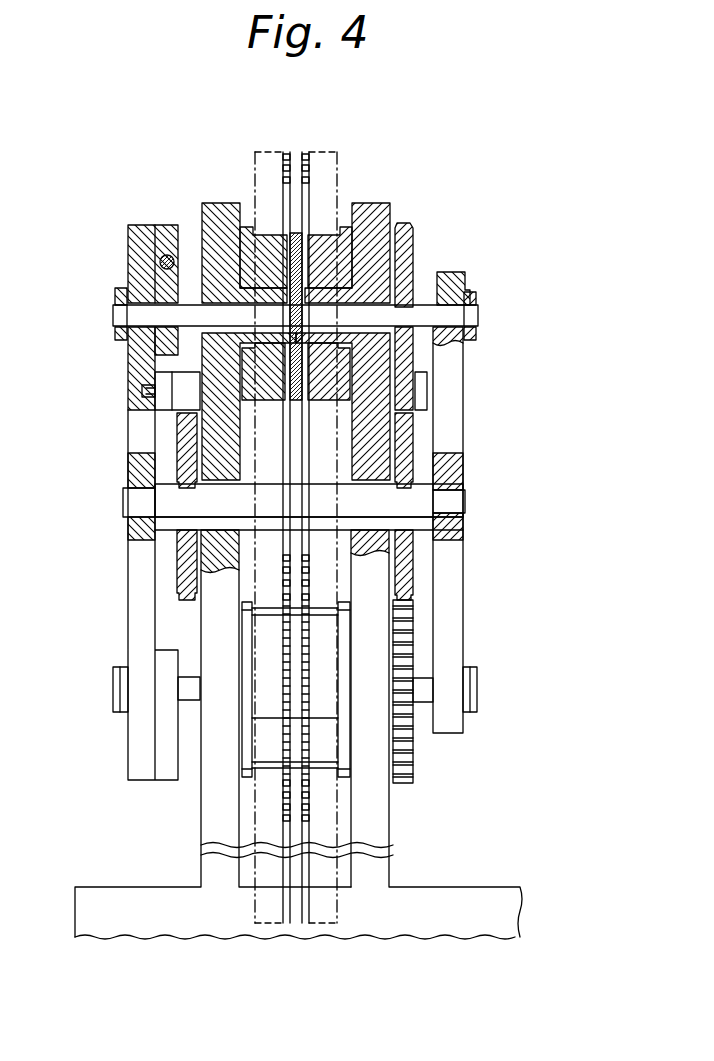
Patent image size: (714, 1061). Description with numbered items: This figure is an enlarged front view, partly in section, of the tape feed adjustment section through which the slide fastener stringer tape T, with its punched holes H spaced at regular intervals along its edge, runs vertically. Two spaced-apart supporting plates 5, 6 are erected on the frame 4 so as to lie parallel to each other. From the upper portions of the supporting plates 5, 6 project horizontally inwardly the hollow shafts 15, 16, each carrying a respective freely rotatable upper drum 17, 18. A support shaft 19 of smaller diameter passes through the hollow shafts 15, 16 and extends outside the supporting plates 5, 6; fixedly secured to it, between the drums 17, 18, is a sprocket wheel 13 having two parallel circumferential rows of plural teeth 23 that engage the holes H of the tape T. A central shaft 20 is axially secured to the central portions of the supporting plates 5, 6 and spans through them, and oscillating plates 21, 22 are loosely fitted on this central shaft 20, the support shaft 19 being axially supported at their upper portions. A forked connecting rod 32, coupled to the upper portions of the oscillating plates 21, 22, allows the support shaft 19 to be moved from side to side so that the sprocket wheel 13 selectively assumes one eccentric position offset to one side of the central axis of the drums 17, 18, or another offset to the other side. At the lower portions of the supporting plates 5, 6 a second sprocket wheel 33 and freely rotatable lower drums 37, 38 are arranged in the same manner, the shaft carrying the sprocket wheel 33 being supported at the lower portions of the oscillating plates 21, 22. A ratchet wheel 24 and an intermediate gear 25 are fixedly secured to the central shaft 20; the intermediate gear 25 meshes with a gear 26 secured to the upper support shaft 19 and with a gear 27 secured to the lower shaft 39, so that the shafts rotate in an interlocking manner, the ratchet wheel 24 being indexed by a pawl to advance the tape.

The frame 4 is at (498, 902).
The supporting plate 5 is at (218, 873).
The supporting plate 6 is at (377, 868).
The sprocket wheel 13 is at (385, 210).
The hollow shaft 15 is at (267, 287).
The hollow shaft 16 is at (407, 283).
The upper drum 17 is at (268, 240).
The upper drum 18 is at (307, 260).
The support shaft 19 is at (130, 283).
The central shaft 20 is at (197, 508).
The oscillating plate 21 is at (140, 362).
The oscillating plate 22 is at (453, 407).
The teeth 23 is at (320, 232).
The ratchet wheel 24 is at (183, 442).
The intermediate gear 25 is at (410, 445).
The gear 26 is at (417, 287).
The gear 27 is at (407, 730).
The forked connecting rod 32 is at (160, 405).
The sprocket wheel 33 is at (297, 747).
The lower drum 37 is at (267, 747).
The lower drum 38 is at (320, 728).
The lower shaft 39 is at (427, 683).
The stringer tape T is at (263, 157).
The punched holes H is at (306, 152).